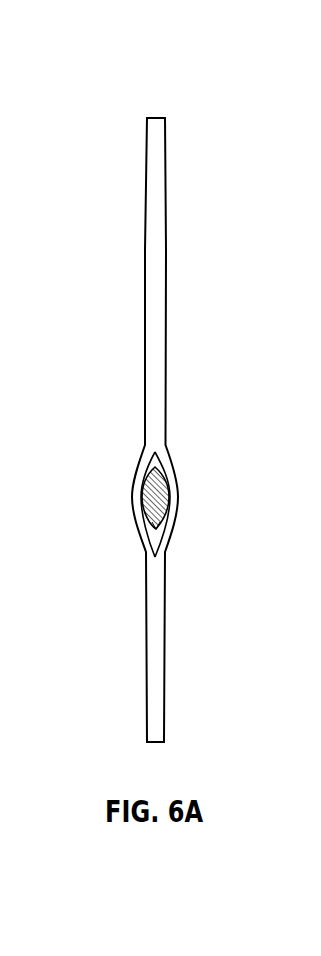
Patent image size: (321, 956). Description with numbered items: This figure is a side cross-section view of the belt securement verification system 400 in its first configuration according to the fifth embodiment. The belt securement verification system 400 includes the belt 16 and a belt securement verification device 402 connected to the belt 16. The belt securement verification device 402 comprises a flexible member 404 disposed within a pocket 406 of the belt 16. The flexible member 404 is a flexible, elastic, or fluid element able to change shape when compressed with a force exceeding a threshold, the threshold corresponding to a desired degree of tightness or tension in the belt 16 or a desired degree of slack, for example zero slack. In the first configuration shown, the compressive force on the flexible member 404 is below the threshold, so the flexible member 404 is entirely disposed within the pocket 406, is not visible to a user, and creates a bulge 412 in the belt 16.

The belt securement verification system 400 is at (161, 408).
The belt 16 is at (162, 192).
The belt securement verification device 402 is at (161, 486).
The flexible member 404 is at (147, 502).
The pocket 406 is at (155, 528).
The bulge 412 is at (179, 505).